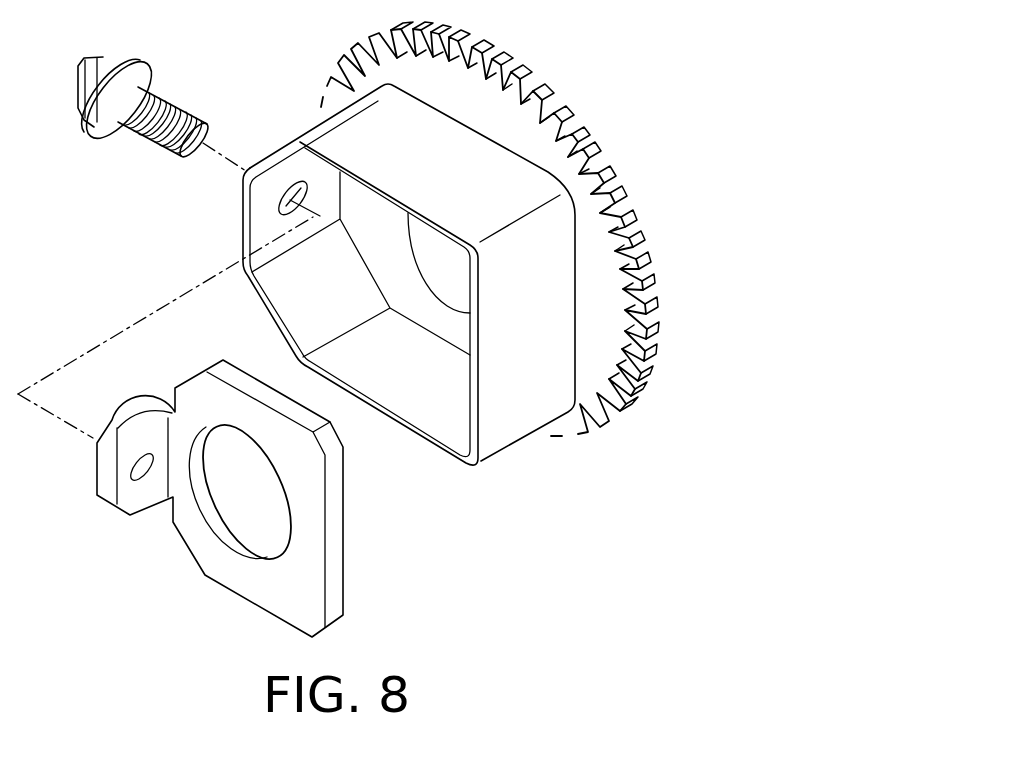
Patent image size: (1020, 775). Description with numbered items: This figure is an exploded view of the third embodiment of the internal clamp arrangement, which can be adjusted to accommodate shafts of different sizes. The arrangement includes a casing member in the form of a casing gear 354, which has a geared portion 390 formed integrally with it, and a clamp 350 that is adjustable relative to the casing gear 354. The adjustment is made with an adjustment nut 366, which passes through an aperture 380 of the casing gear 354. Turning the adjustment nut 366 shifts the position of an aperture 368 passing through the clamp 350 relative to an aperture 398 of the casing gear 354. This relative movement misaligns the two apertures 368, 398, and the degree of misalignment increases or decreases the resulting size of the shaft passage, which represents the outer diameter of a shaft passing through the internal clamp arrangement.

The clamp 350 is at (225, 620).
The casing gear 354 is at (552, 368).
The adjustment nut 366 is at (163, 100).
The aperture 368 is at (229, 509).
The aperture 380 is at (283, 203).
The geared portion 390 is at (594, 290).
The aperture 398 is at (452, 286).